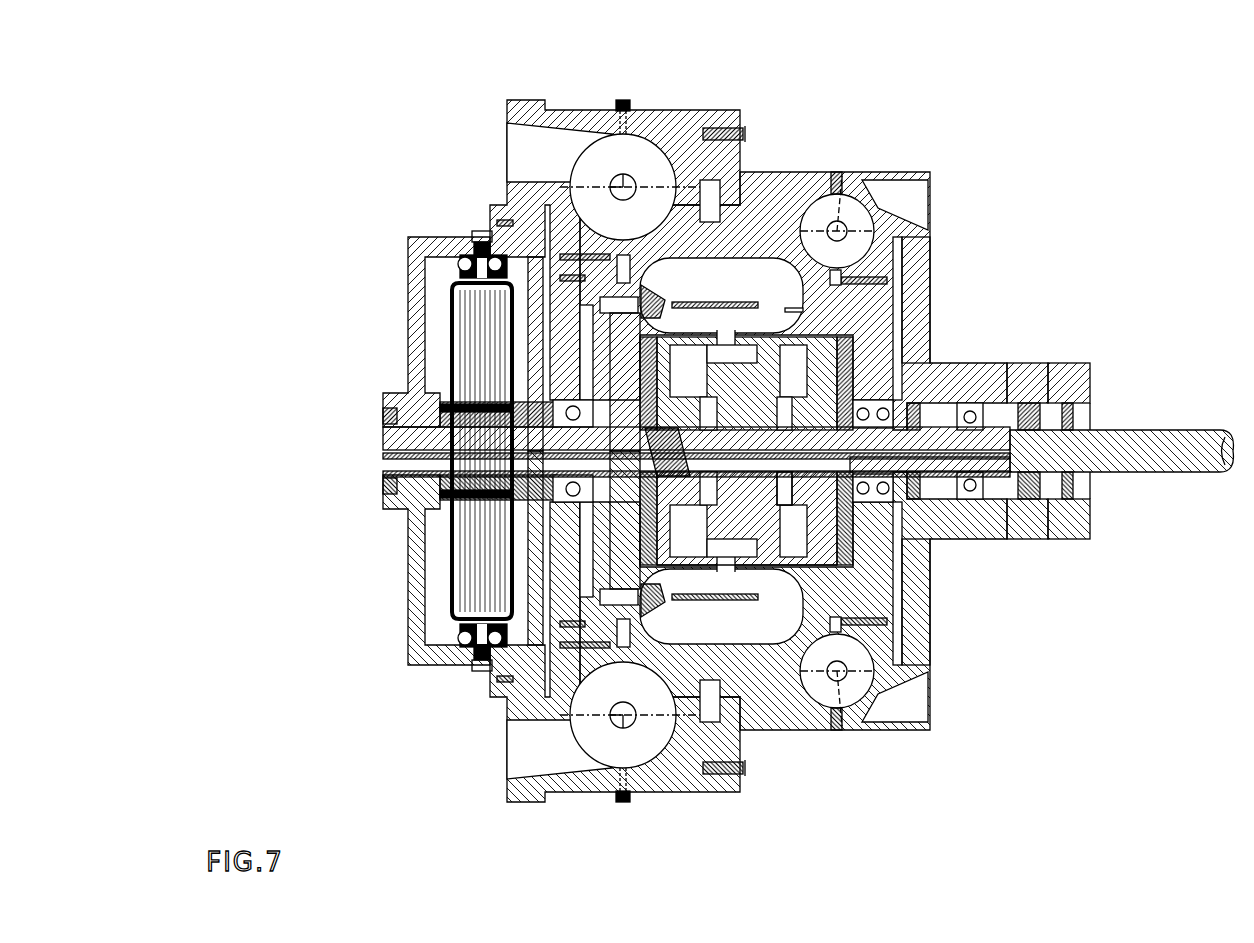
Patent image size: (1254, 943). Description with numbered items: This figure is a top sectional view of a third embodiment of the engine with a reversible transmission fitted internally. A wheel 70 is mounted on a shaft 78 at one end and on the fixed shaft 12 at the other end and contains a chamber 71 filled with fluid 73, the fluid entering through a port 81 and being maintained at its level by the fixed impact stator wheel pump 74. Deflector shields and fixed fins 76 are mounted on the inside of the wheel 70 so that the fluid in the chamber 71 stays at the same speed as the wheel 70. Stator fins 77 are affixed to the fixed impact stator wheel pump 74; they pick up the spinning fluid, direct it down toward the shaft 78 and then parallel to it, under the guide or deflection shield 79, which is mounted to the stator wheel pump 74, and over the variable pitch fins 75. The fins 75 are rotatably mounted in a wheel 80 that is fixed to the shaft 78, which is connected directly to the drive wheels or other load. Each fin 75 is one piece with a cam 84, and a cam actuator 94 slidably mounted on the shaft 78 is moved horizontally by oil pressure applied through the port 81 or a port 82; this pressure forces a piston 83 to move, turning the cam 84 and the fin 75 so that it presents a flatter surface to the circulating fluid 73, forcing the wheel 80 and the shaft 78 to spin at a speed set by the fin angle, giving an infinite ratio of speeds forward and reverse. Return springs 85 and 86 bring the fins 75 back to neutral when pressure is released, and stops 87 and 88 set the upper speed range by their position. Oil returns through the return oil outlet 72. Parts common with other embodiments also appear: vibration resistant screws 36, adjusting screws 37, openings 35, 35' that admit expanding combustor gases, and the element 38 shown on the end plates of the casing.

The fixed shaft 12 is at (387, 442).
The opening 35 is at (570, 652).
The opening 35' is at (569, 231).
The vibration resistant screws 36 is at (742, 135).
The adjusting screws 37 is at (893, 277).
The end plate 38 is at (920, 205).
The wheel 70 is at (895, 260).
The chamber 71 is at (780, 285).
The return oil outlet 72 is at (385, 467).
The fluid 73 is at (595, 300).
The fixed impact stator wheel pump 74 is at (577, 290).
The variable pitch fins 75 is at (757, 587).
The fixed fins 76 is at (737, 257).
The stator fins 77 is at (643, 303).
The shaft 78 is at (1145, 430).
The guide 79 is at (707, 300).
The wheel 80 is at (810, 355).
The port 81 is at (1007, 363).
The port 82 is at (1052, 363).
The piston 83 is at (793, 497).
The cam 84 is at (760, 552).
The return spring 85 is at (903, 483).
The return spring 86 is at (560, 485).
The stop 87 is at (880, 400).
The stop 88 is at (560, 418).
The cam actuator 94 is at (800, 312).